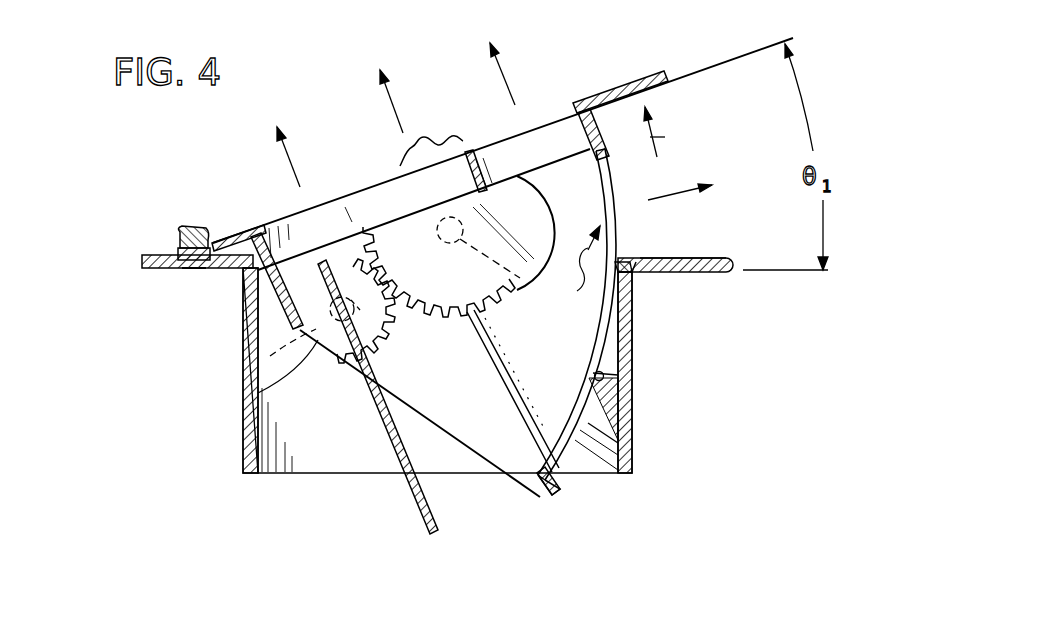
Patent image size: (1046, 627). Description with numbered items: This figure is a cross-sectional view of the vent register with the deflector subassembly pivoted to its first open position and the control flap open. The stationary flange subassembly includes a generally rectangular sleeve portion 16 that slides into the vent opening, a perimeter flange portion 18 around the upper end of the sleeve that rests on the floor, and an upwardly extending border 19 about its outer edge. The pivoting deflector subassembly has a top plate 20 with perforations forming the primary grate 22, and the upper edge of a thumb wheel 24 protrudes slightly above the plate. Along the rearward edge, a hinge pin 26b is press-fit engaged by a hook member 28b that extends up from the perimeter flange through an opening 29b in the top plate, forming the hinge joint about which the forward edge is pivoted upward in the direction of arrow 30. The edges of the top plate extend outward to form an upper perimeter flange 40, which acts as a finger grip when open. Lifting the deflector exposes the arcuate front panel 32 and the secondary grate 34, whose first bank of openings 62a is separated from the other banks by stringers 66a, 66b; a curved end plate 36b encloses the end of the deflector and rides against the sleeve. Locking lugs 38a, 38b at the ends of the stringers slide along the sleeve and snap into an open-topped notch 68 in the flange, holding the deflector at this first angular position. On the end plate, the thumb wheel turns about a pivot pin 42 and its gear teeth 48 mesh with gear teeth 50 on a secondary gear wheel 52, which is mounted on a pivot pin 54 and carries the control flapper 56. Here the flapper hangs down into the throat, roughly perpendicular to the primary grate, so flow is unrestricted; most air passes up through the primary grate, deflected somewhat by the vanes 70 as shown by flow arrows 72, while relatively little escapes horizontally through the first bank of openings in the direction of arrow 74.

The sleeve portion 16 is at (630, 357).
The perimeter flange portion 18 is at (683, 258).
The upwardly extending border 19 is at (710, 257).
The top plate 20 is at (636, 92).
The primary grate 22 is at (540, 127).
The thumb wheel 24 is at (430, 145).
The hinge pin 26b is at (178, 248).
The hook member 28b is at (195, 228).
The opening 29b is at (188, 272).
The arrow 30 is at (650, 137).
The arcuate front panel 32 is at (547, 490).
The secondary grate 34 is at (630, 447).
The curved end plate 36b is at (520, 470).
The locking lug 38a is at (637, 265).
The locking lug 38b is at (603, 375).
The upper perimeter flange 40 is at (660, 84).
The pivot pin 42 is at (513, 297).
The gear teeth 48 is at (477, 312).
The gear teeth 50 is at (392, 334).
The secondary gear wheel 52 is at (258, 393).
The pivot pin 54 is at (246, 366).
The control flapper 56 is at (405, 477).
The first bank of vent openings 62a is at (575, 314).
The stringer 66a is at (630, 302).
The stringer 66b is at (630, 435).
The open-topped notch 68 is at (636, 240).
The vanes 70 is at (349, 200).
The flow arrows 72 is at (283, 135).
The arrow 74 is at (672, 193).